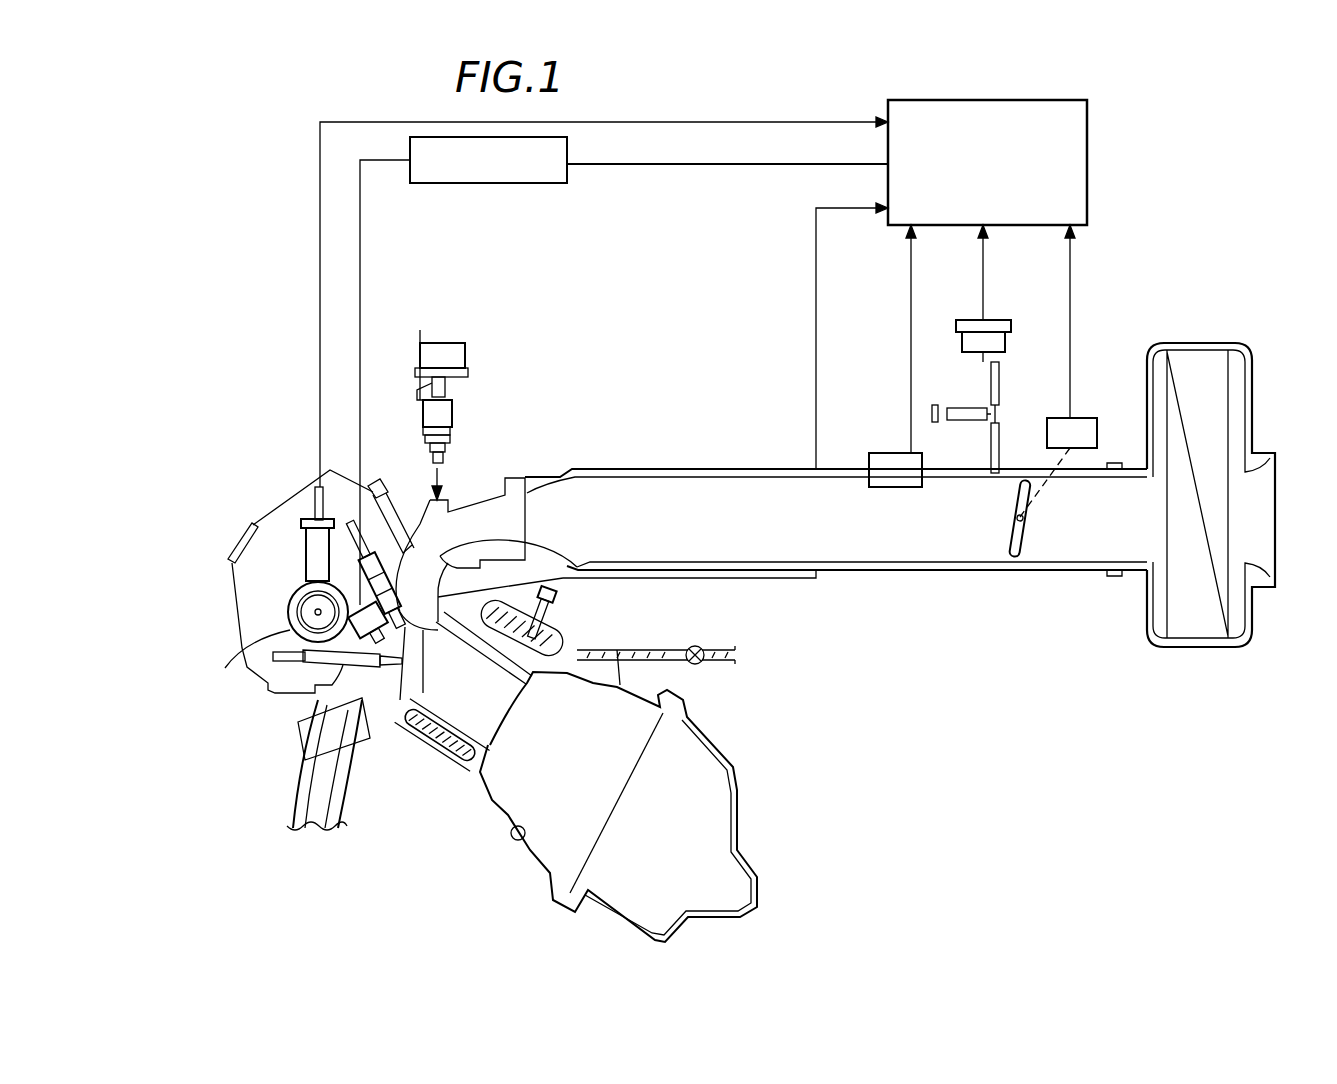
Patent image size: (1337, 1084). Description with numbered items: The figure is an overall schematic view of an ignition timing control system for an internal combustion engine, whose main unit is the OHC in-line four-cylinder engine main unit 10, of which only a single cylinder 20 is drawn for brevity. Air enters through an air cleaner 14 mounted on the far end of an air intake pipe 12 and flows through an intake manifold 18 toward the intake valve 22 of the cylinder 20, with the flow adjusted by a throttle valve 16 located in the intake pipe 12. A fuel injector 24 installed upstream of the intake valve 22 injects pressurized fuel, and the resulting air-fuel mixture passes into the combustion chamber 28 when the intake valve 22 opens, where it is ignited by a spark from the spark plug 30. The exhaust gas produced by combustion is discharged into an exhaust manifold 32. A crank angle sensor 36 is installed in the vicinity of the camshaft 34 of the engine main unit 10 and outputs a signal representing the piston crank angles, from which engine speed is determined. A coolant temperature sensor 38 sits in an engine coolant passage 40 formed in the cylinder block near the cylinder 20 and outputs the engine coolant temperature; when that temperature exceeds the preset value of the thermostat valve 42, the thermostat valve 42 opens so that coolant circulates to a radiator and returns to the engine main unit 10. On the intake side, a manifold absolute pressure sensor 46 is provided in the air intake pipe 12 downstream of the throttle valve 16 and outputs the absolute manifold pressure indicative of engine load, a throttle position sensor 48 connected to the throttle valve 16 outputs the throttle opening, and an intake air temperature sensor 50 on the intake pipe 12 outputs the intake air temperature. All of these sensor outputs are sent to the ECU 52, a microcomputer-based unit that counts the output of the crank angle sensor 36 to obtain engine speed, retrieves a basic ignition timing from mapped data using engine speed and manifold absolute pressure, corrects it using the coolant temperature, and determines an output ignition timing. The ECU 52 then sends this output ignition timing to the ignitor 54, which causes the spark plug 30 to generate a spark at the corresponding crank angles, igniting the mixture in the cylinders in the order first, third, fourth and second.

The engine main unit 10 is at (294, 440).
The air intake pipe 12 is at (702, 468).
The air cleaner 14 is at (1146, 364).
The throttle valve 16 is at (1016, 506).
The intake manifold 18 is at (527, 478).
The cylinder 20 is at (466, 718).
The intake valve 22 is at (430, 648).
The fuel injector 24 is at (455, 422).
The combustion chamber 28 is at (387, 710).
The spark plug 30 is at (415, 720).
The exhaust manifold 32 is at (305, 752).
The camshaft 34 is at (272, 640).
The crank angle sensor 36 is at (313, 552).
The coolant temperature sensor 38 is at (562, 614).
The engine coolant passage 40 is at (556, 652).
The thermostat valve 42 is at (700, 648).
The manifold absolute pressure sensor 46 is at (972, 322).
The throttle position sensor 48 is at (1097, 437).
The intake air temperature sensor 50 is at (886, 455).
The ECU 52 is at (1087, 165).
The ignitor 54 is at (543, 176).